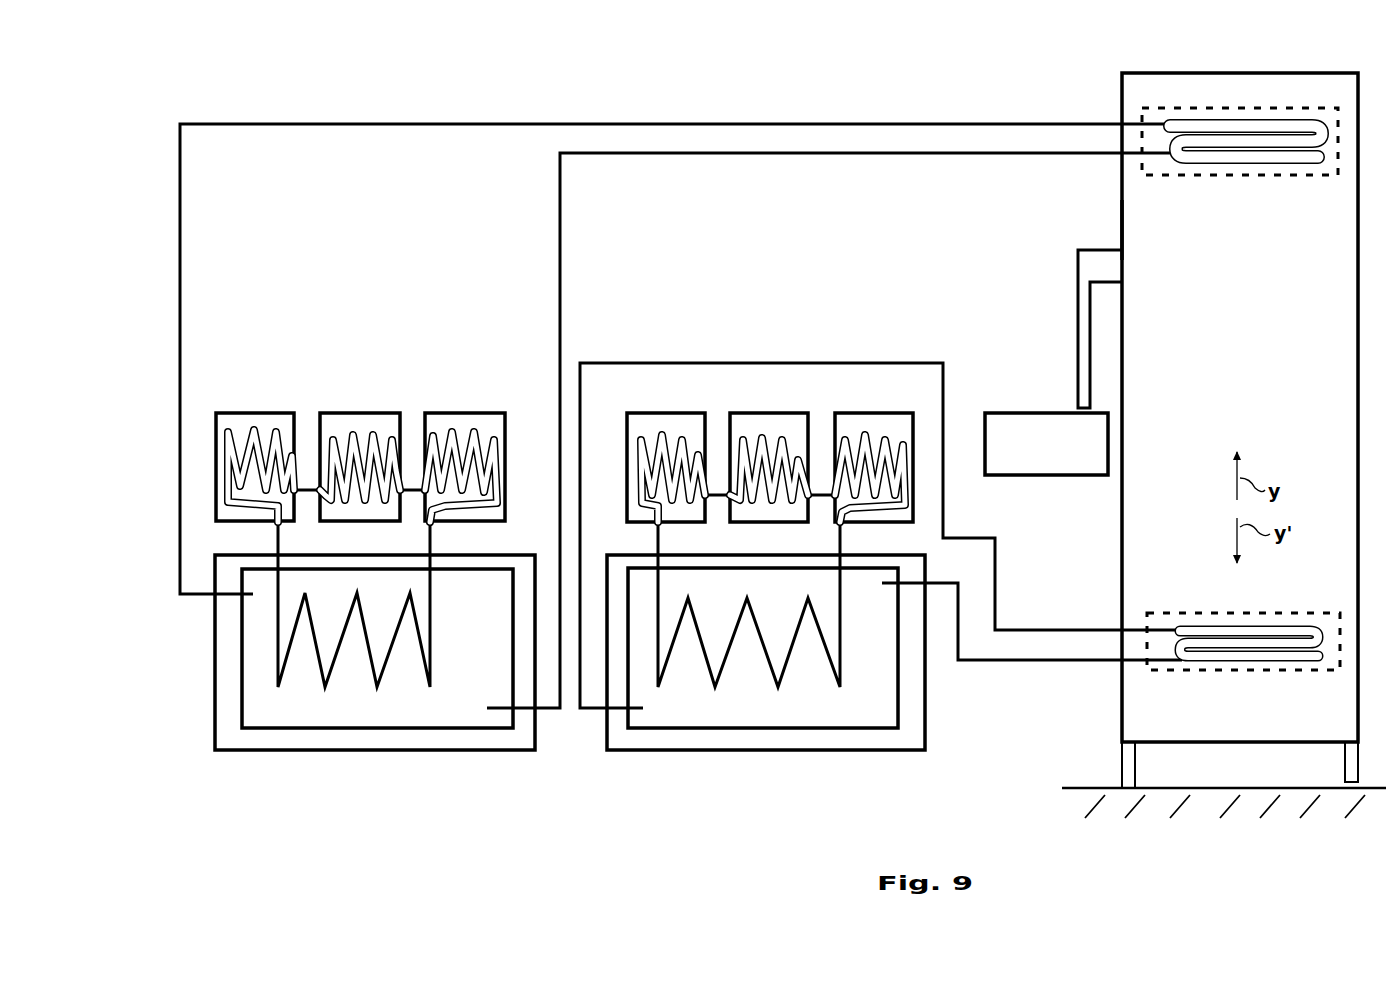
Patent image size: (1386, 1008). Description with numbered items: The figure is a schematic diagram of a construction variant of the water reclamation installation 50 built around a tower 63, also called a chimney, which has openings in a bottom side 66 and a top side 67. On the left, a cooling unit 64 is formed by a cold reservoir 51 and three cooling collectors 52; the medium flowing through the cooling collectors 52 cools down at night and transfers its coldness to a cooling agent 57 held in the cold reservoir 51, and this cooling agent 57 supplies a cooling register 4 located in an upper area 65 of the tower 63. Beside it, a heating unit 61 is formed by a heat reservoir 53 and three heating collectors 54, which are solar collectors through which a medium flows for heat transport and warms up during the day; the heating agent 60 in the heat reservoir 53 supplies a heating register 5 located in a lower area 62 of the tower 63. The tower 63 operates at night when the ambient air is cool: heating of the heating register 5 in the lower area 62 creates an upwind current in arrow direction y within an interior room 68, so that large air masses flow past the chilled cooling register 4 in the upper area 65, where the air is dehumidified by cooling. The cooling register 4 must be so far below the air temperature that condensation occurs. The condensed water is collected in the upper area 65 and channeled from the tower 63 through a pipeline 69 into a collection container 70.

The water reclamation installation 50 is at (153, 145).
The cold reservoir 51 is at (355, 738).
The cooling collectors 52 is at (237, 428).
The heat reservoir 53 is at (748, 738).
The heating collectors 54 is at (660, 428).
The cooling agent 57 is at (452, 705).
The heating agent 60 is at (872, 695).
The heating unit 61 is at (840, 318).
The lower area 62 is at (1095, 598).
The tower 63 is at (1120, 228).
The cooling unit 64 is at (366, 348).
The upper area 65 is at (1075, 183).
The bottom side 66 is at (1200, 745).
The top side 67 is at (1145, 73).
The interior room 68 is at (1221, 392).
The pipeline 69 is at (1082, 310).
The collection container 70 is at (1021, 456).
The cooling register 4 is at (1210, 158).
The heating register 5 is at (1210, 622).